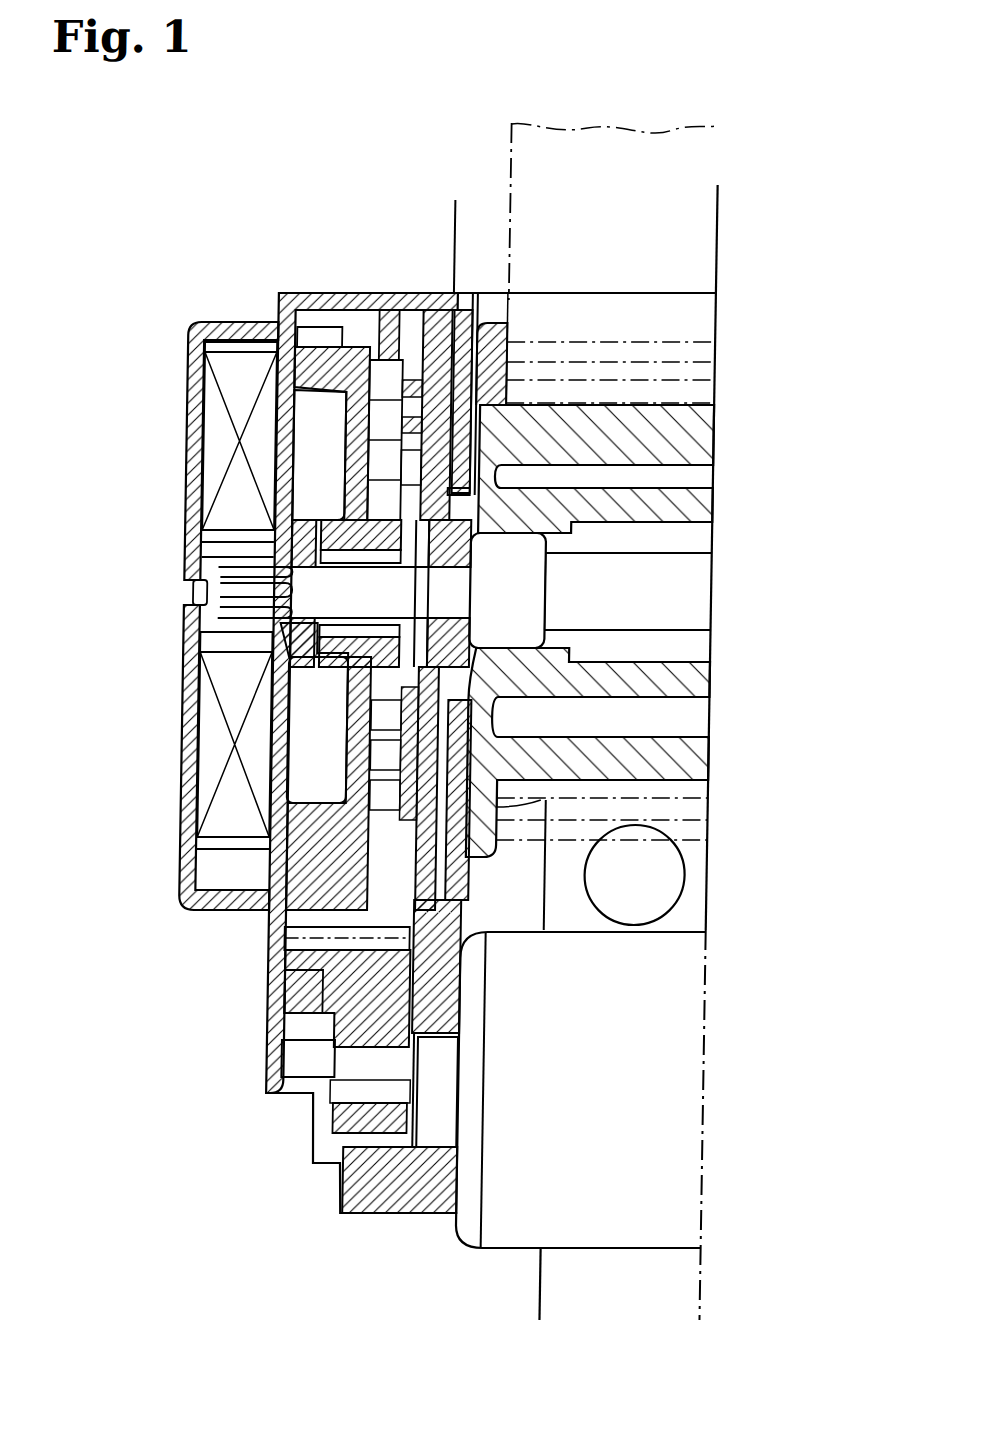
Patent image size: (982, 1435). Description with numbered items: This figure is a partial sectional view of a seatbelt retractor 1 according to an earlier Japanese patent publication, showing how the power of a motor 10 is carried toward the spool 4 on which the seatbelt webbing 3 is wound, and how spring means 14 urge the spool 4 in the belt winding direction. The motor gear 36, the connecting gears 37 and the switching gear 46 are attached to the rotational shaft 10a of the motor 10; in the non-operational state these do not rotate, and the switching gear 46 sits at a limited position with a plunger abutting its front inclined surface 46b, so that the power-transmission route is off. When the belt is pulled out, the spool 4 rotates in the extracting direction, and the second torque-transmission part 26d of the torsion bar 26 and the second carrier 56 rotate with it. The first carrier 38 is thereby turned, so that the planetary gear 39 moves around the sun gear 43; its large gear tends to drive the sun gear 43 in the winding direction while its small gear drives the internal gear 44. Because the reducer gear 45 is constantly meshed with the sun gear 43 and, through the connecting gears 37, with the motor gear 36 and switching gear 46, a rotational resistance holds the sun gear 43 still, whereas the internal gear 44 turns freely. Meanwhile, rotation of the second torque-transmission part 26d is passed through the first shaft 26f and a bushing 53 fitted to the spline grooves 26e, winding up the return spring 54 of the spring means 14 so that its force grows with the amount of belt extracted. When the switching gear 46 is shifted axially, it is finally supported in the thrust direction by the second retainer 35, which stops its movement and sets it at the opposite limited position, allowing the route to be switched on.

The seatbelt retractor 1 is at (201, 208).
The seatbelt webbing 3 is at (502, 145).
The spool 4 is at (635, 423).
The motor 10 is at (637, 1250).
The rotational shaft of the motor 10a is at (453, 1125).
The spring means 14 is at (121, 932).
The torsion bar 26 is at (678, 603).
The second torque-transmission part 26d is at (515, 585).
The spline grooves 26e is at (205, 593).
The first shaft 26f is at (526, 540).
The second retainer 35 is at (471, 975).
The motor gear 36 is at (321, 1118).
The connecting gears 37 is at (279, 1038).
The first carrier 38 is at (458, 296).
The planetary gear 39 is at (401, 380).
The sun gear 43 is at (348, 665).
The internal gear 44 is at (371, 370).
The reducer gear 45 is at (326, 340).
The switching gear 46 is at (306, 937).
The front inclined surface 46b is at (346, 980).
The bushing 53 is at (229, 650).
The return spring 54 is at (225, 405).
The second carrier 56 is at (518, 490).